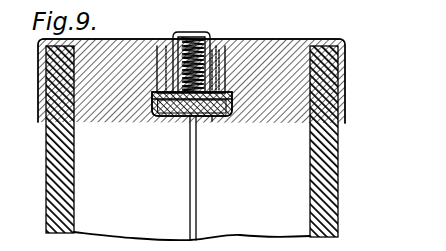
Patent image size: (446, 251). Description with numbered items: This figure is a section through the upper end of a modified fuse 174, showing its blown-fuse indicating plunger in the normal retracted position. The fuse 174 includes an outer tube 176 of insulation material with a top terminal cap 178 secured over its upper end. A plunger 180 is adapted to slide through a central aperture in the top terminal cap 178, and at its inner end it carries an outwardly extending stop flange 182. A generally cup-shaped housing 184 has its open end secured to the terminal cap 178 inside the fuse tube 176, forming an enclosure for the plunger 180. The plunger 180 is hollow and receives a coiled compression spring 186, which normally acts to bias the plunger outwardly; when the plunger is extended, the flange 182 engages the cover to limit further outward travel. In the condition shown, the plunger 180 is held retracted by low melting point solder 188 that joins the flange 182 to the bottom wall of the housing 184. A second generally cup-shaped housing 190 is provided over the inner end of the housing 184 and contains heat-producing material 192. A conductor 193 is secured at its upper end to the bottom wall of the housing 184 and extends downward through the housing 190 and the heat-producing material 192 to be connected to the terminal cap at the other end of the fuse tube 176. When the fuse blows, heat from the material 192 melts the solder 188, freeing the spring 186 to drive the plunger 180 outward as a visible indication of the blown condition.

The fuse 174 is at (146, 200).
The outer tube 176 is at (338, 210).
The top terminal cap 178 is at (315, 28).
The plunger 180 is at (209, 34).
The stop flange 182 is at (225, 88).
The cup-shaped housing 184 is at (160, 65).
The coiled compression spring 186 is at (174, 35).
The low melting point solder 188 is at (157, 95).
The second cup-shaped housing 190 is at (230, 110).
The heat-producing material 192 is at (212, 118).
The conductor 193 is at (197, 200).